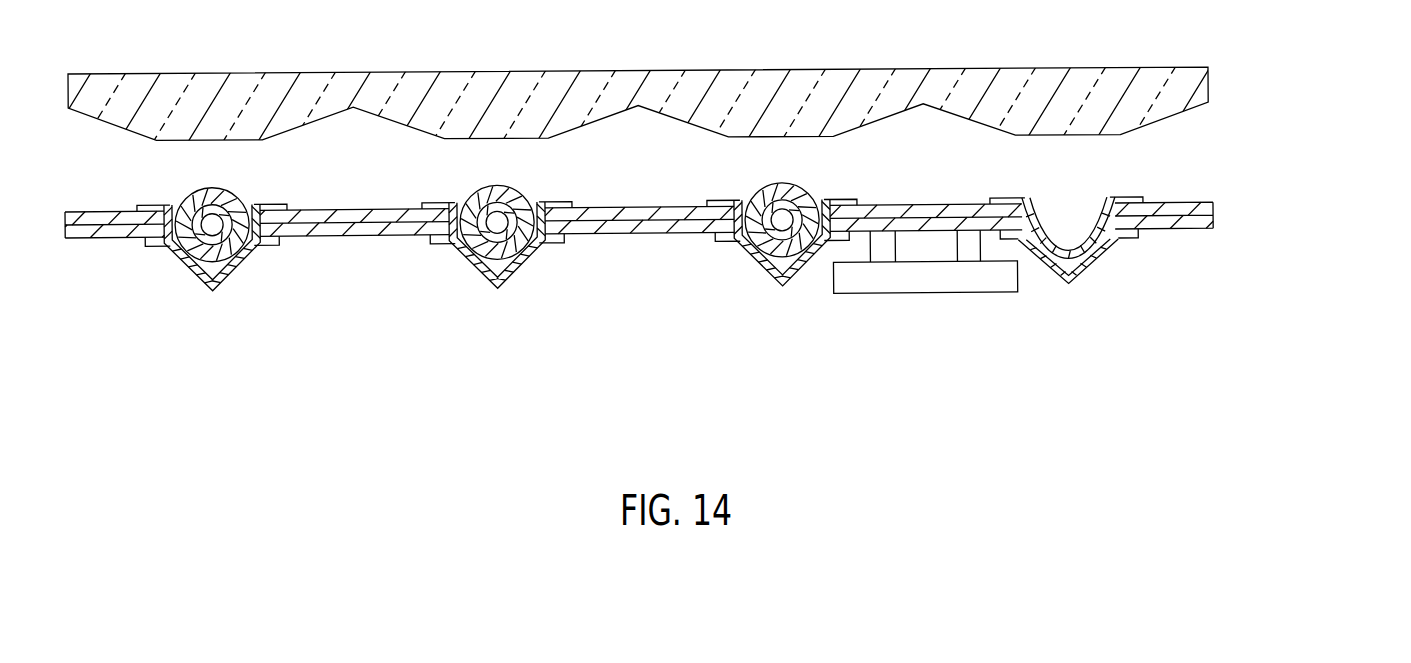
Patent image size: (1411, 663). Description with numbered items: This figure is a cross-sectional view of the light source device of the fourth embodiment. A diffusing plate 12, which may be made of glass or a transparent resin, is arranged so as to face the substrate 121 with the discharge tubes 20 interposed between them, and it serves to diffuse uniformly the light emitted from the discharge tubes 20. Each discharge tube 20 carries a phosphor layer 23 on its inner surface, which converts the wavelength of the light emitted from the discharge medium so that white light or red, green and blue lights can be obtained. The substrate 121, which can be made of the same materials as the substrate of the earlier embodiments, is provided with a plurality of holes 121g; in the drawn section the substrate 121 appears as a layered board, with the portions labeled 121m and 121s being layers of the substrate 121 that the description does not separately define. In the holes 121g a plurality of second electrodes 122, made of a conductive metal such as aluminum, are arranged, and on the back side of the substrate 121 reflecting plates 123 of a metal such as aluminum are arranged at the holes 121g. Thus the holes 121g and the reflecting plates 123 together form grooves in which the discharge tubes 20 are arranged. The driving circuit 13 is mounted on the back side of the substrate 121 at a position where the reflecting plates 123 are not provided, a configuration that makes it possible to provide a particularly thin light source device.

The diffusing plate 12 is at (1198, 75).
The driving circuit 13 is at (915, 290).
The discharge tube 20 is at (183, 267).
The phosphor layer 23 is at (245, 267).
The substrate 121 is at (1327, 172).
The main layer of circuit board 121m is at (1212, 206).
The sub layer of circuit board 121s is at (1212, 222).
The hole 121g is at (1084, 190).
The second electrode 122 is at (1048, 270).
The reflecting plate 123 is at (1105, 253).